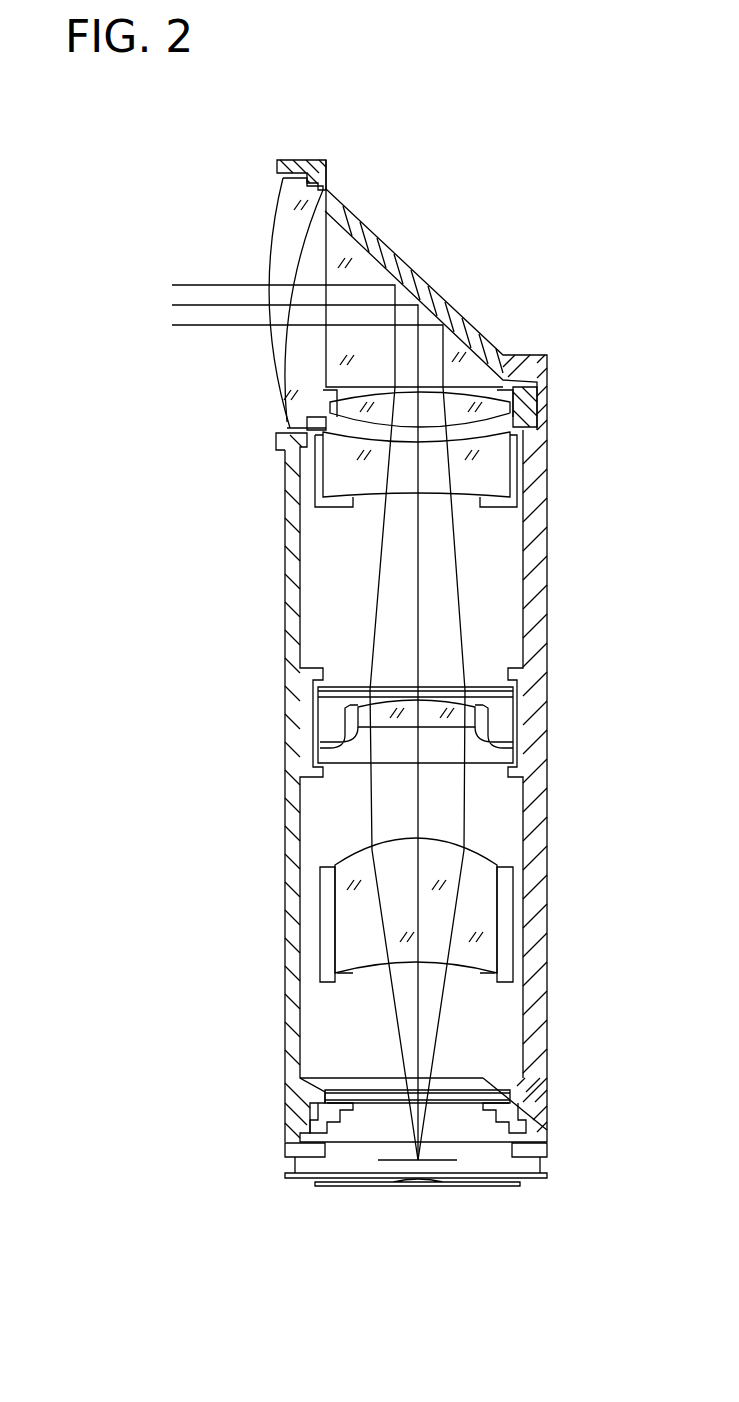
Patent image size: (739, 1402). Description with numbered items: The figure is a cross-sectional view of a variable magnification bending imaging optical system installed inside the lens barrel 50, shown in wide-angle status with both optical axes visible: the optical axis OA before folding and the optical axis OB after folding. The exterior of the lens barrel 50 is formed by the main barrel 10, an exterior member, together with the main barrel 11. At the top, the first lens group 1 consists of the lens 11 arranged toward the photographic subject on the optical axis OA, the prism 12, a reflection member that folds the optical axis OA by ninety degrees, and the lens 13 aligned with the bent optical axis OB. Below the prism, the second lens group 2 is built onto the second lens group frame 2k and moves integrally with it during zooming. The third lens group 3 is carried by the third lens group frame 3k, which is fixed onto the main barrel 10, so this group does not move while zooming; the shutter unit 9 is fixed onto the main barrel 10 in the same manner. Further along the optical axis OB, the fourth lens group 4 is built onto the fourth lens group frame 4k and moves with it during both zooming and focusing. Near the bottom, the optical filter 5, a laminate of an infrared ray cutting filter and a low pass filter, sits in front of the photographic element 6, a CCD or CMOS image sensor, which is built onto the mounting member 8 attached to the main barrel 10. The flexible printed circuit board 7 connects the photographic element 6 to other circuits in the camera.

The first lens group 1 is at (506, 214).
The second lens group 2 is at (485, 450).
The second lens group frame 2k is at (510, 487).
The third lens group 3 is at (432, 720).
The third lens group frame 3k is at (503, 756).
The fourth lens group 4 is at (475, 872).
The fourth lens group frame 4k is at (507, 903).
The optical filter 5 is at (462, 1093).
The photographic element 6 is at (497, 1163).
The flexible printed circuit board 7 is at (537, 1177).
The mounting member 8 is at (540, 1149).
The shutter unit 9 is at (502, 720).
The main barrel 10 is at (290, 590).
The lens 11 is at (303, 193).
The prism 12 is at (367, 263).
The lens 13 is at (432, 407).
The lens barrel 50 is at (551, 210).
The optical axis before folding OA is at (190, 300).
The optical axis after folding OB is at (420, 563).